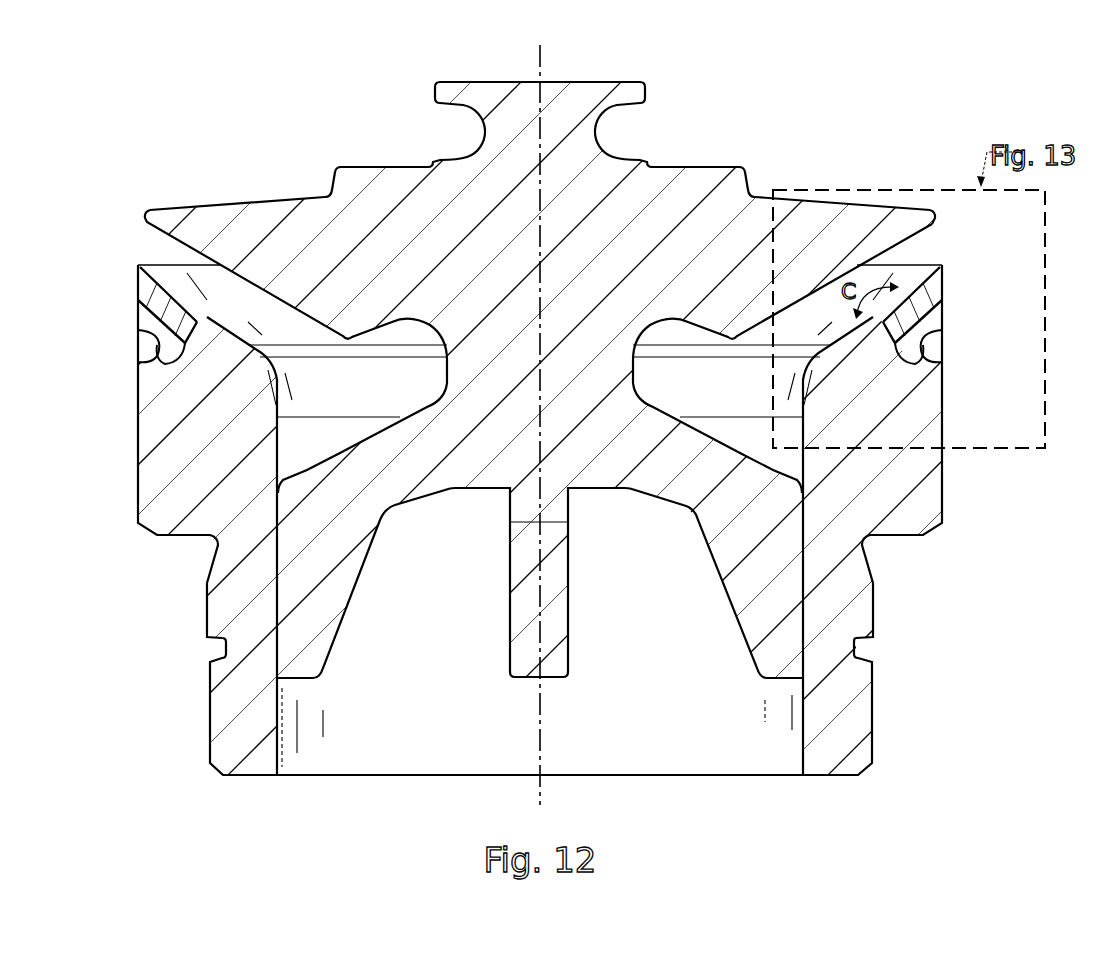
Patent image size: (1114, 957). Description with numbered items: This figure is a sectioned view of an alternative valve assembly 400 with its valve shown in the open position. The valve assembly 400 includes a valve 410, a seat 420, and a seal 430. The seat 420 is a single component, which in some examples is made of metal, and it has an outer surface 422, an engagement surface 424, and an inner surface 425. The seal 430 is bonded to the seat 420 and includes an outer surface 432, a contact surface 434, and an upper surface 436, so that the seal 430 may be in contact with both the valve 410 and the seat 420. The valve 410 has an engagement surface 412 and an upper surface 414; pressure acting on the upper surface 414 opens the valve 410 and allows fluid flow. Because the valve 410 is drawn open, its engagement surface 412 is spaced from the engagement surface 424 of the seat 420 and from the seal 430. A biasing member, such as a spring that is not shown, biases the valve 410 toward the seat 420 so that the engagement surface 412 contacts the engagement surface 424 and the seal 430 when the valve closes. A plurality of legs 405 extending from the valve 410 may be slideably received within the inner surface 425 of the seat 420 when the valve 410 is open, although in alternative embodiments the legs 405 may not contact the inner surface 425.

The valve assembly 400 is at (288, 115).
The legs 405 is at (745, 630).
The valve 410 is at (707, 177).
The engagement surface 412 is at (928, 240).
The upper surface 414 is at (793, 197).
The seat 420 is at (928, 433).
The outer surface 422 is at (940, 485).
The engagement surface 424 is at (840, 343).
The inner surface 425 is at (803, 733).
The seal 430 is at (930, 288).
The outer surface 432 is at (942, 318).
The contact surface 434 is at (896, 284).
The upper surface 436 is at (940, 260).